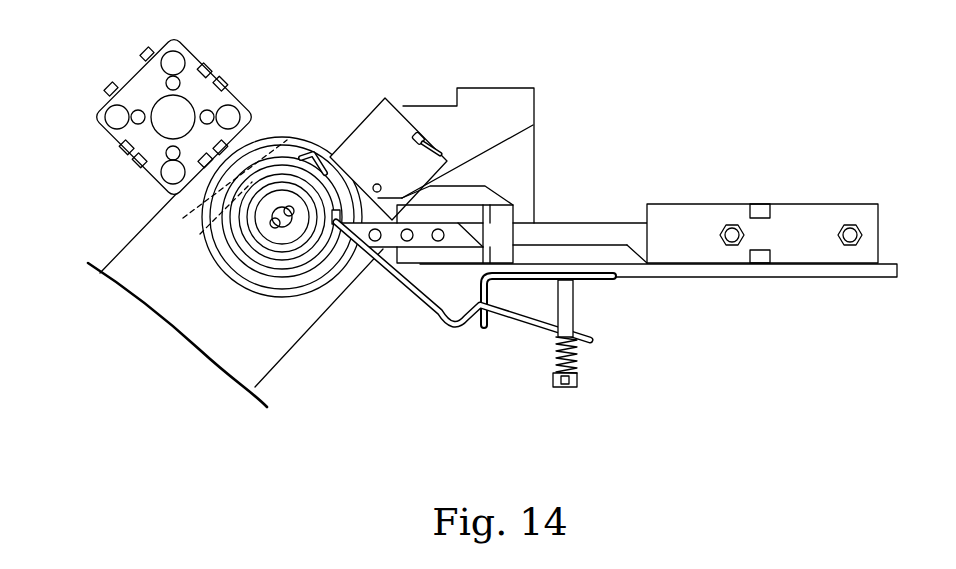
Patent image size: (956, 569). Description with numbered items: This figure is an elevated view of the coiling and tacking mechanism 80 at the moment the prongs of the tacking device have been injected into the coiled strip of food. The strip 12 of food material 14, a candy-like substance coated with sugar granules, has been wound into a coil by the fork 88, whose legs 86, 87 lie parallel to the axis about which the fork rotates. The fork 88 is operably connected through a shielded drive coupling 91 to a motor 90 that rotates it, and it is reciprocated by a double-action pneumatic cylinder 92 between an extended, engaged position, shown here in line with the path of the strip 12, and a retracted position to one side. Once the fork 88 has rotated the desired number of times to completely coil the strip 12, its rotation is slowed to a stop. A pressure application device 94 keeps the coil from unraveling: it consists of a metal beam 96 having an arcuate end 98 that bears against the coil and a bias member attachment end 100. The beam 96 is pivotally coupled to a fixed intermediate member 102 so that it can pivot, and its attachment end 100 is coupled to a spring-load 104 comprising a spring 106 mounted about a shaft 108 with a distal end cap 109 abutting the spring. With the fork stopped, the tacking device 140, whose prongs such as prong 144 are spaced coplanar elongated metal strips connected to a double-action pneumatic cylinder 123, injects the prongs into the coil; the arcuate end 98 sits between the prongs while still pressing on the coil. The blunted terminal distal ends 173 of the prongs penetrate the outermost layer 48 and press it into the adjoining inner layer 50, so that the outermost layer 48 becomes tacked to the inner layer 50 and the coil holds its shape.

The strip 12 is at (240, 227).
The food material 14 is at (272, 276).
The outermost layer 48 is at (300, 269).
The inner layer 50 is at (313, 254).
The coiling and tacking mechanism 80 is at (338, 70).
The leg 86 is at (272, 226).
The leg 87 is at (282, 215).
The fork 88 is at (166, 218).
The motor 90 is at (130, 75).
The shielded drive coupling 91 is at (278, 138).
The double-action pneumatic cylinder 92 is at (287, 152).
The pressure application device 94 is at (512, 362).
The beam 96 is at (438, 323).
The arcuate end 98 is at (309, 150).
The bias member attachment end 100 is at (593, 341).
The fixed intermediate member 102 is at (482, 328).
The spring-load 104 is at (562, 410).
The spring 106 is at (578, 362).
The shaft 108 is at (577, 307).
The distal end cap 109 is at (580, 384).
The double-action pneumatic cylinder 123 is at (680, 203).
The tacking device 140 is at (524, 190).
The prong 144 is at (422, 248).
The terminal distal end 173 is at (343, 249).